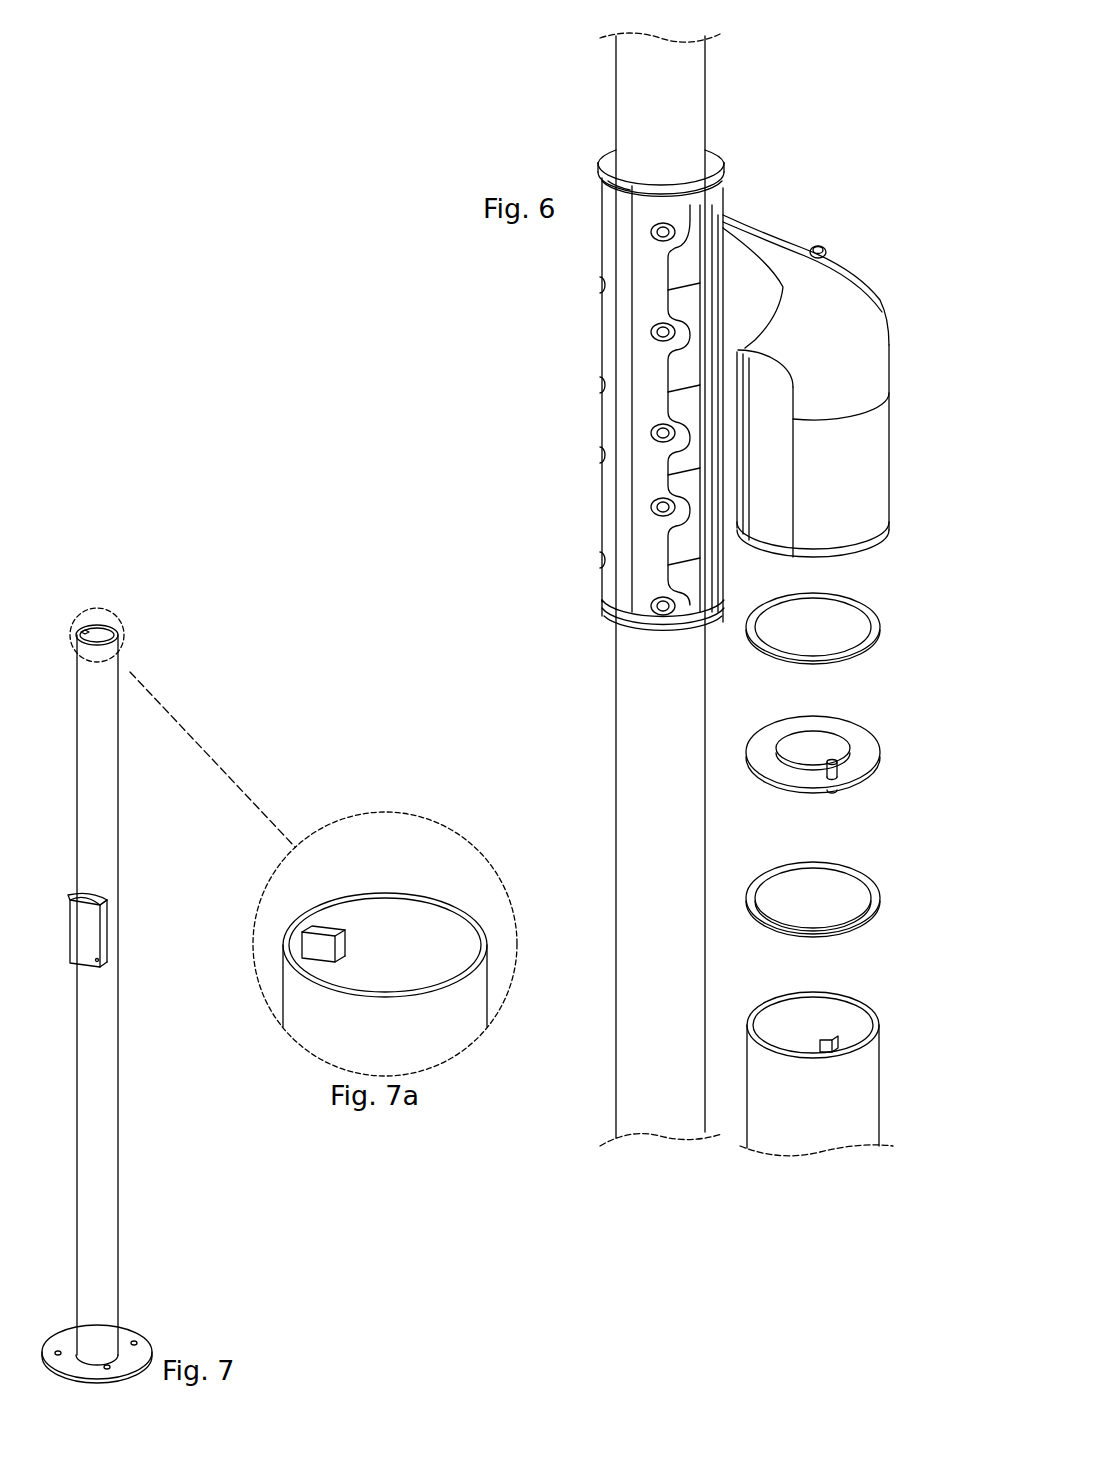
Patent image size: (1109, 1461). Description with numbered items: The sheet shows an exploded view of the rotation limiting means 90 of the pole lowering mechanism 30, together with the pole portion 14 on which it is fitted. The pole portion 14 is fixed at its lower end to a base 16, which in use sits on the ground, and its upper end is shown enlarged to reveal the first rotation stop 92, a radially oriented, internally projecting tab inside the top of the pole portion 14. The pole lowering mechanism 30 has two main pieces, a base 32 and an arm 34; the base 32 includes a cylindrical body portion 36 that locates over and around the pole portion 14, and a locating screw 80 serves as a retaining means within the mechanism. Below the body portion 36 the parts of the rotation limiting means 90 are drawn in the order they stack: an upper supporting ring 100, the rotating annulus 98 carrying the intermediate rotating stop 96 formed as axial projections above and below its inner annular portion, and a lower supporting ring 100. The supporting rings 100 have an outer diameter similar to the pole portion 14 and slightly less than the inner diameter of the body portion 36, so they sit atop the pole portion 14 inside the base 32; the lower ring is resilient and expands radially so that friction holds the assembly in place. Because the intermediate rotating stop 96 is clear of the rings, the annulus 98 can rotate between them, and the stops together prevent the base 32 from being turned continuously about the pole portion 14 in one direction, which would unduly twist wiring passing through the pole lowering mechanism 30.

In FIG. 6, the pole portion 14 is at (863, 1086).
In FIG. 7, the pole portion 14 is at (107, 1072).
In FIG. 7A, the pole portion 14 is at (445, 1045).
In FIG. 7, the base 16 is at (130, 1333).
In FIG. 6, the pole lowering mechanism 30 is at (843, 361).
In FIG. 6, the base 32 is at (858, 357).
In FIG. 6, the arm 34 is at (608, 323).
In FIG. 6, the body portion 36 is at (860, 495).
In FIG. 6, the locating screw 80 is at (820, 244).
In FIG. 6, the rotation limiting means 90 is at (834, 765).
In FIG. 6, the first rotation stop 92 is at (840, 1048).
In FIG. 7A, the first rotation stop 92 is at (318, 935).
In FIG. 6, the intermediate rotating stop 96 is at (830, 776).
In FIG. 6, the rotating annulus 98 is at (845, 730).
In FIG. 6, the supporting rings 100 is at (800, 657).